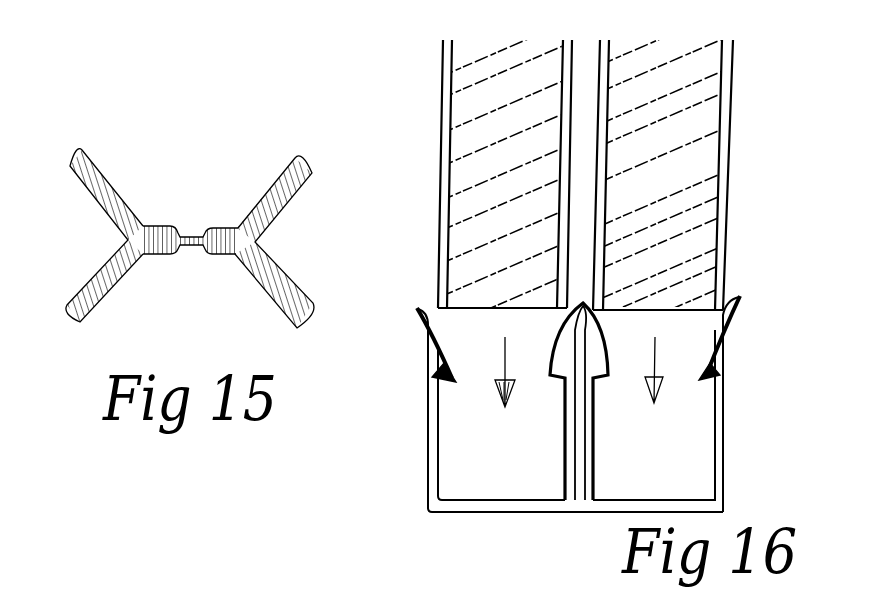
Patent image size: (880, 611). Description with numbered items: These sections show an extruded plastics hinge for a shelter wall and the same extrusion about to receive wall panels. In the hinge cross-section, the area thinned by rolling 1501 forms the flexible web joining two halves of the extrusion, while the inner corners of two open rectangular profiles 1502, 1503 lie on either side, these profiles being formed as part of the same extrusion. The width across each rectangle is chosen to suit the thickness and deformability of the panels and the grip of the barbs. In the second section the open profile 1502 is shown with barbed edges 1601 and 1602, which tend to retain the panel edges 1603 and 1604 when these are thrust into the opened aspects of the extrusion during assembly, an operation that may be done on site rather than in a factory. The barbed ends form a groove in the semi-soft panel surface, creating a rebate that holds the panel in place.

In FIG. 15, the area thinned by rolling 1501 is at (192, 225).
In FIG. 16, the area thinned by rolling 1501 is at (577, 517).
In FIG. 15, the inner corner of open rectangular profile 1502 is at (118, 238).
In FIG. 16, the inner corner of open rectangular profile 1502 is at (427, 477).
In FIG. 15, the inner corner of open rectangular profile 1503 is at (272, 228).
In FIG. 16, the inner corner of open rectangular profile 1503 is at (725, 442).
In FIG. 16, the barbed edge 1601 is at (428, 355).
In FIG. 16, the barbed edge 1602 is at (550, 373).
In FIG. 16, the panel edge 1603 is at (435, 100).
In FIG. 16, the panel edge 1604 is at (727, 185).